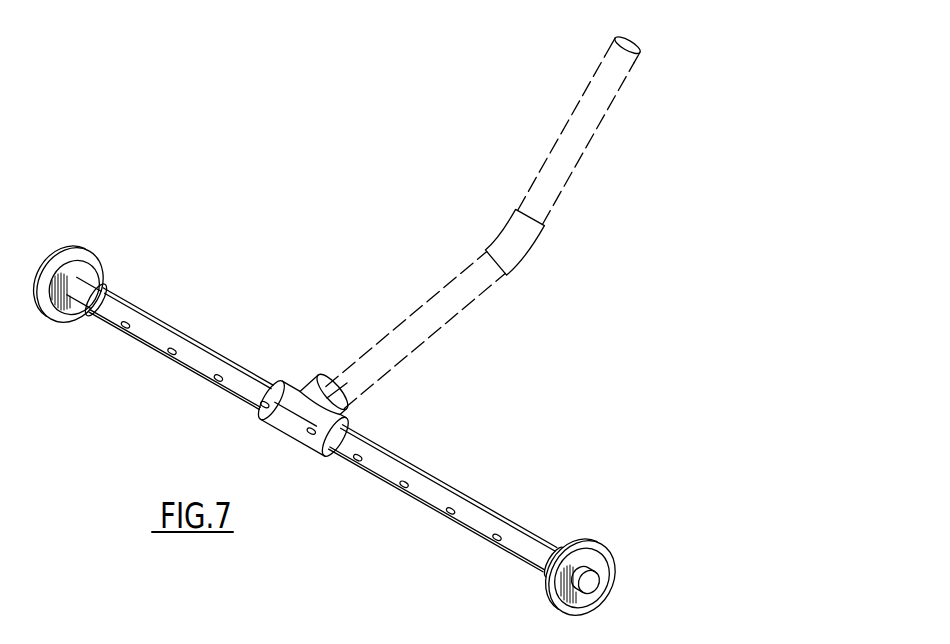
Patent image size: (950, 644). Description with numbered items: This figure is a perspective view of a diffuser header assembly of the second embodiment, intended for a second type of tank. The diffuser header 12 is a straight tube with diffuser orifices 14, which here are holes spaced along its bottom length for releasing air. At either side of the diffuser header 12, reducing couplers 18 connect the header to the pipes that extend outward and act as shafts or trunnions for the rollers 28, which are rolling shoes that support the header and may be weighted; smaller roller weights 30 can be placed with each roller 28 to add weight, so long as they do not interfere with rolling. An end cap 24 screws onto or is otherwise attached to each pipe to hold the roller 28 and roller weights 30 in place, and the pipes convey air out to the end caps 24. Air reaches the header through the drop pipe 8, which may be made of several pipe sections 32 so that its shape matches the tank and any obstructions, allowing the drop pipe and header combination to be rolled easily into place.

The drop pipe 8 is at (493, 230).
The diffuser header 12 is at (165, 330).
The diffuser orifices 14 is at (166, 359).
The reducing couplers 18 is at (86, 318).
The end cap 24 is at (592, 583).
The rollers 28 is at (80, 251).
The roller weights 30 is at (84, 266).
The pipe sections 32 is at (574, 157).